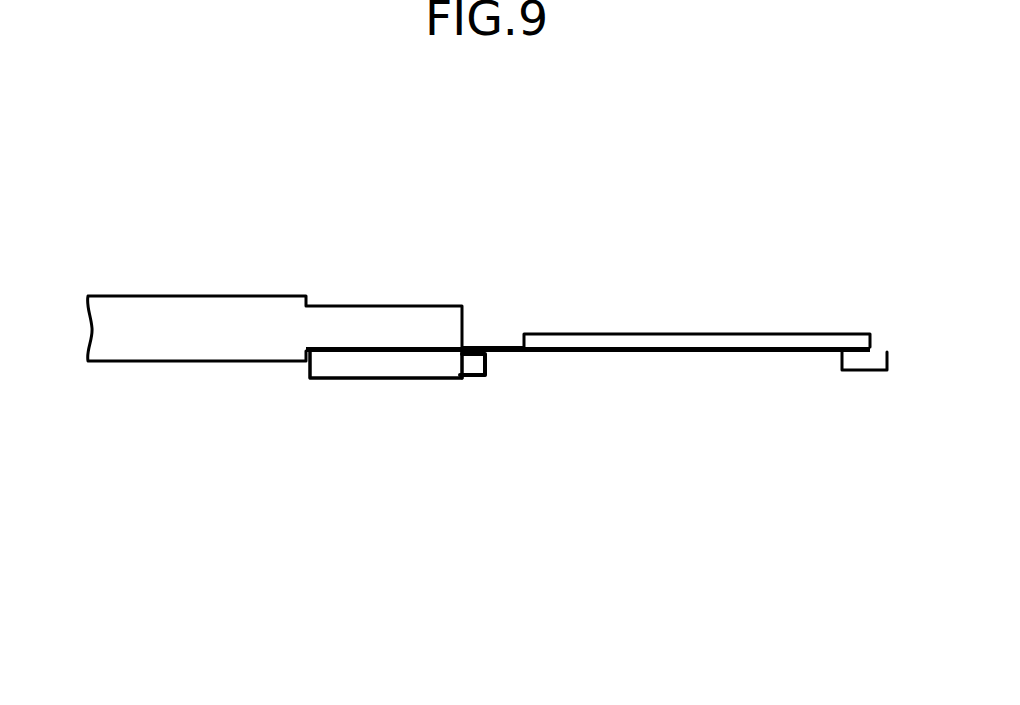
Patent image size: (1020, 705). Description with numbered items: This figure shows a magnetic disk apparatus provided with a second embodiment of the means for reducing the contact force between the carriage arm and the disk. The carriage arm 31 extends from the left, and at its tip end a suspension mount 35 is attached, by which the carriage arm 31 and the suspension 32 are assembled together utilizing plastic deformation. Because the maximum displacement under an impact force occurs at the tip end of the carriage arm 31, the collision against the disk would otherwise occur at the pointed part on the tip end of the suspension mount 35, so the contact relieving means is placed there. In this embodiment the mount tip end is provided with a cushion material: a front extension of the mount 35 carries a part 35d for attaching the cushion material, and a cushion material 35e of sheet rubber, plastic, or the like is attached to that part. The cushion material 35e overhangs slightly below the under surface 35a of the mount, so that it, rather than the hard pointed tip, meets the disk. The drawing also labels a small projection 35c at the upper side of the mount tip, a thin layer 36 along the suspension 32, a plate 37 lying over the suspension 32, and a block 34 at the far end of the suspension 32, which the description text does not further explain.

The carriage arm 31 is at (231, 296).
The suspension 32 is at (570, 350).
The end block 34 is at (858, 358).
The suspension mount 35 is at (355, 380).
The under surface of the mount 35a is at (409, 380).
The upper projection 35c is at (487, 356).
The part for attaching the cushion material 35d is at (463, 380).
The cushion material 35e is at (487, 376).
The conductor layer 36 is at (497, 346).
The cover plate 37 is at (668, 334).